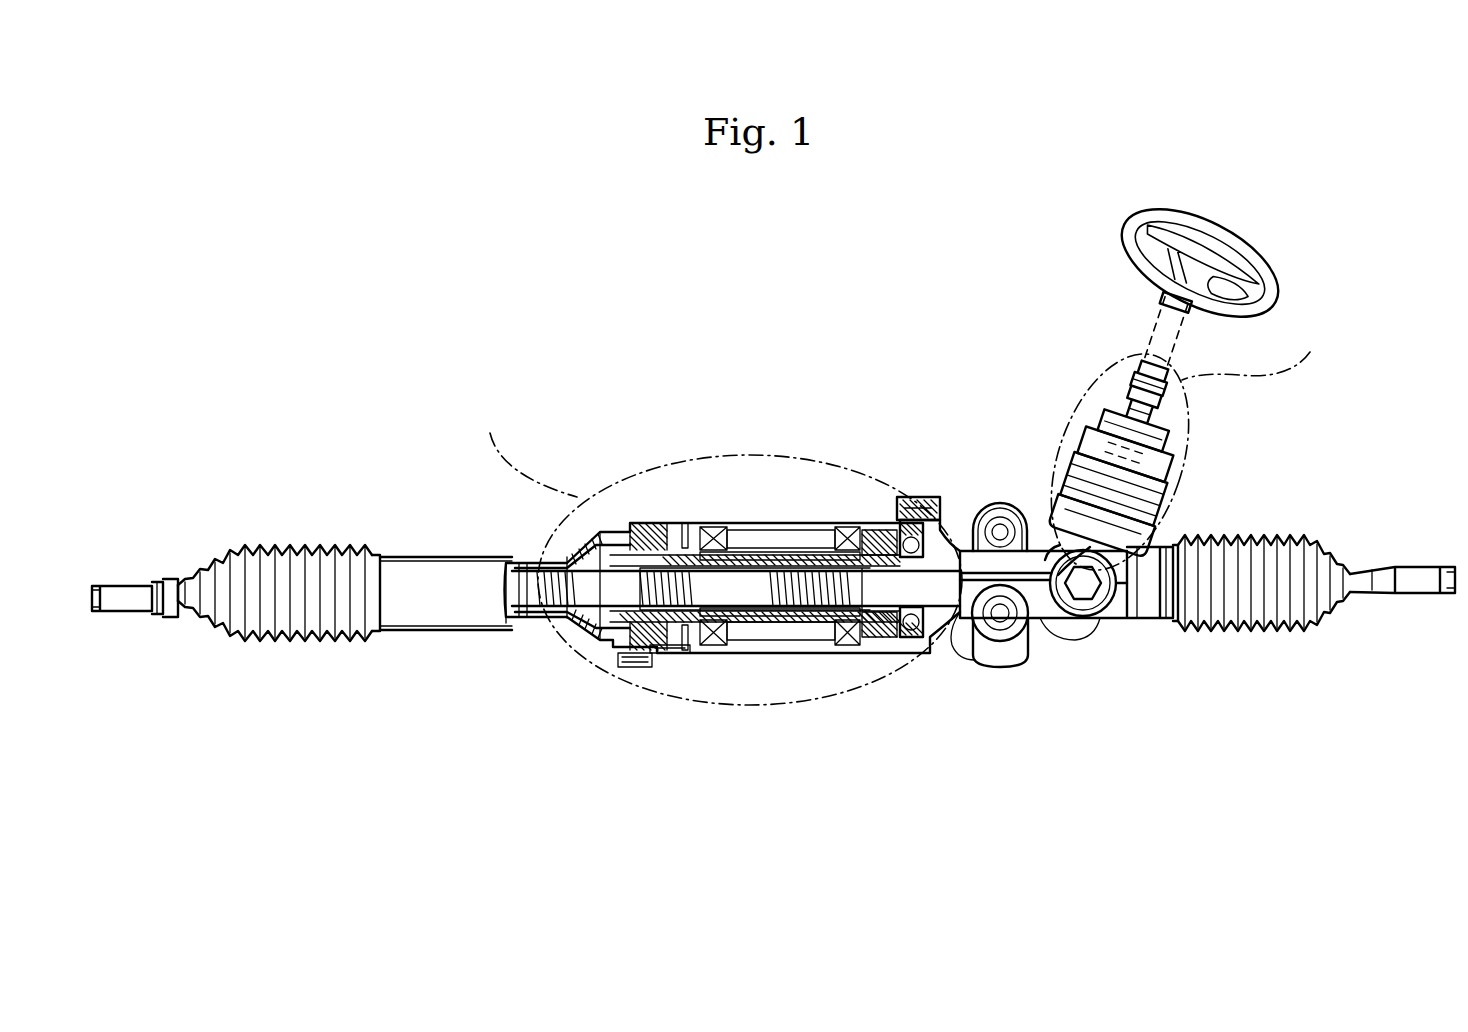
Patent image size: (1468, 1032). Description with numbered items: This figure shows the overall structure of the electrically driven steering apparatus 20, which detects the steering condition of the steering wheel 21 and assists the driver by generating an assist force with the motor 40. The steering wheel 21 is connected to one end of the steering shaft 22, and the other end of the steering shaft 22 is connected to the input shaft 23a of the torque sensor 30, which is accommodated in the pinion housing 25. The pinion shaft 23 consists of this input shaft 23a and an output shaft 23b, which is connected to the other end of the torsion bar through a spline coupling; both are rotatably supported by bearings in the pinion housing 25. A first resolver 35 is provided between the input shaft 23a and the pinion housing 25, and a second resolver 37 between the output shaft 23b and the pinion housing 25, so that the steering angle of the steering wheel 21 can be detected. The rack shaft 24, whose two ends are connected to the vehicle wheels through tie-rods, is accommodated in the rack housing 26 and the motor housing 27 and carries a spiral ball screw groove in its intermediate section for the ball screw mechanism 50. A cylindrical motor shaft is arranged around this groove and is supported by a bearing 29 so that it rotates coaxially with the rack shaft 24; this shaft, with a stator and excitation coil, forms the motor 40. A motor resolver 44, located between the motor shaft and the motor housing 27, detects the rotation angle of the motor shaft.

The electrically driven steering apparatus 20 is at (337, 194).
The steering wheel 21 is at (1266, 257).
The steering shaft 22 is at (1148, 332).
The pinion shaft 23 is at (1176, 385).
The input shaft 23a is at (1086, 400).
The output shaft 23b is at (1046, 472).
The rack shaft 24 is at (527, 630).
The pinion housing 25 is at (1071, 447).
The rack housing 26 is at (536, 548).
The motor housing 27 is at (795, 530).
The bearing 29 is at (887, 518).
The torque sensor 30 is at (1283, 430).
The first resolver 35 is at (1182, 458).
The second resolver 37 is at (1176, 482).
The motor 40 is at (741, 526).
The motor resolver 44 is at (866, 650).
The ball screw mechanism 50 is at (630, 530).